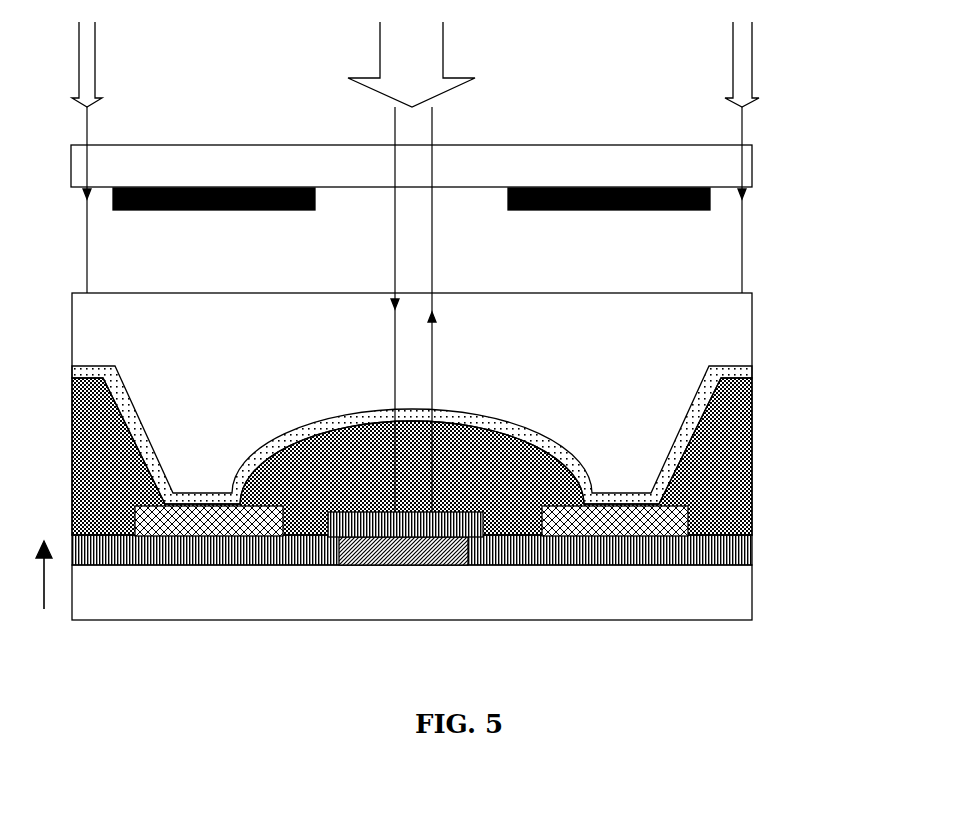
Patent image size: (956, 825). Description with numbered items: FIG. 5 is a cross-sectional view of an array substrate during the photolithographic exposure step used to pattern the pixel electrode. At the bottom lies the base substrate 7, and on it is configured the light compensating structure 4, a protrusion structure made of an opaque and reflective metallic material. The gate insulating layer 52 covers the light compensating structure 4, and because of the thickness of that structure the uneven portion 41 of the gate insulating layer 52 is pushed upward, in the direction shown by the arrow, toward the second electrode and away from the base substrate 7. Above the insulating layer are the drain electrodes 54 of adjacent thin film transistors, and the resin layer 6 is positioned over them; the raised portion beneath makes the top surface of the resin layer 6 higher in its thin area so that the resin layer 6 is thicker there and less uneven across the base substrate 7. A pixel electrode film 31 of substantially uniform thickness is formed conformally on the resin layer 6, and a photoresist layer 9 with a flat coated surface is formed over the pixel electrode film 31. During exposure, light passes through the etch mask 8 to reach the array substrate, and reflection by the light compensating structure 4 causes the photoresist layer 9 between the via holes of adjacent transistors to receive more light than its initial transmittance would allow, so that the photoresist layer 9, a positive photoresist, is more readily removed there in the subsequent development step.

The etch mask 8 is at (738, 173).
The photoresist layer 9 is at (737, 333).
The pixel electrode film 31 is at (737, 373).
The resin layer 6 is at (737, 462).
The drain electrode 54 is at (670, 532).
The uneven portion 41 is at (452, 525).
The gate insulating layer 52 is at (738, 553).
The base substrate 7 is at (738, 606).
The light compensating structure 4 is at (427, 567).